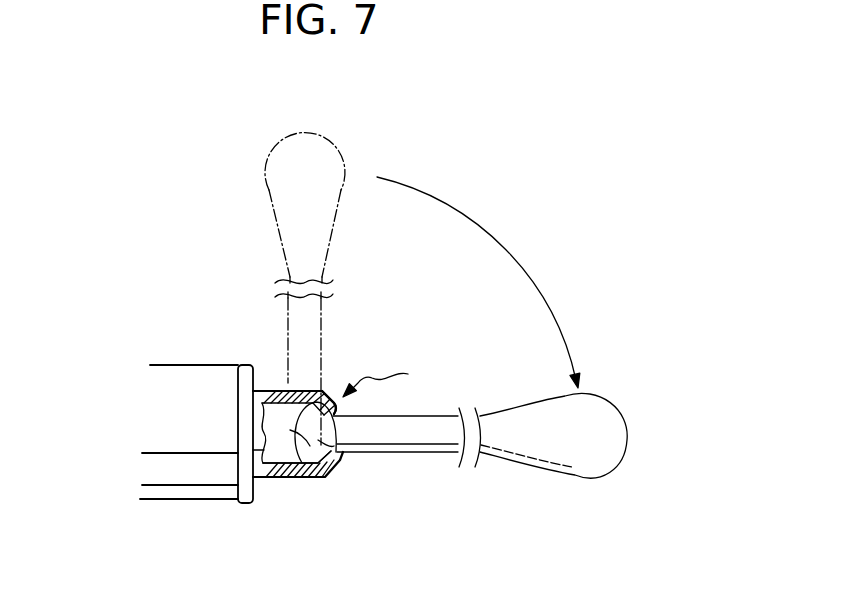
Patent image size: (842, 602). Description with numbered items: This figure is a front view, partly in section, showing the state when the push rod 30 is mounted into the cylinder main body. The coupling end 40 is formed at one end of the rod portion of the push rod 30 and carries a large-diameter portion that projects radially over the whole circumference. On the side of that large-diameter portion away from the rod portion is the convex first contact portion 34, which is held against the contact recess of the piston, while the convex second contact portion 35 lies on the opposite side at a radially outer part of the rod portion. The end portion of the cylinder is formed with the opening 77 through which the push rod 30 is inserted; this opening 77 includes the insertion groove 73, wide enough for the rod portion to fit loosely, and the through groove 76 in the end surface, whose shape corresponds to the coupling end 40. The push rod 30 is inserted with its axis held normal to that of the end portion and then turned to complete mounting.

The push rod 30 is at (322, 322).
The first contact portion 34 is at (290, 430).
The second contact portion 35 is at (333, 444).
The coupling end 40 is at (303, 477).
The insertion groove 73 is at (311, 389).
The through groove 76 is at (336, 399).
The opening 77 is at (394, 375).